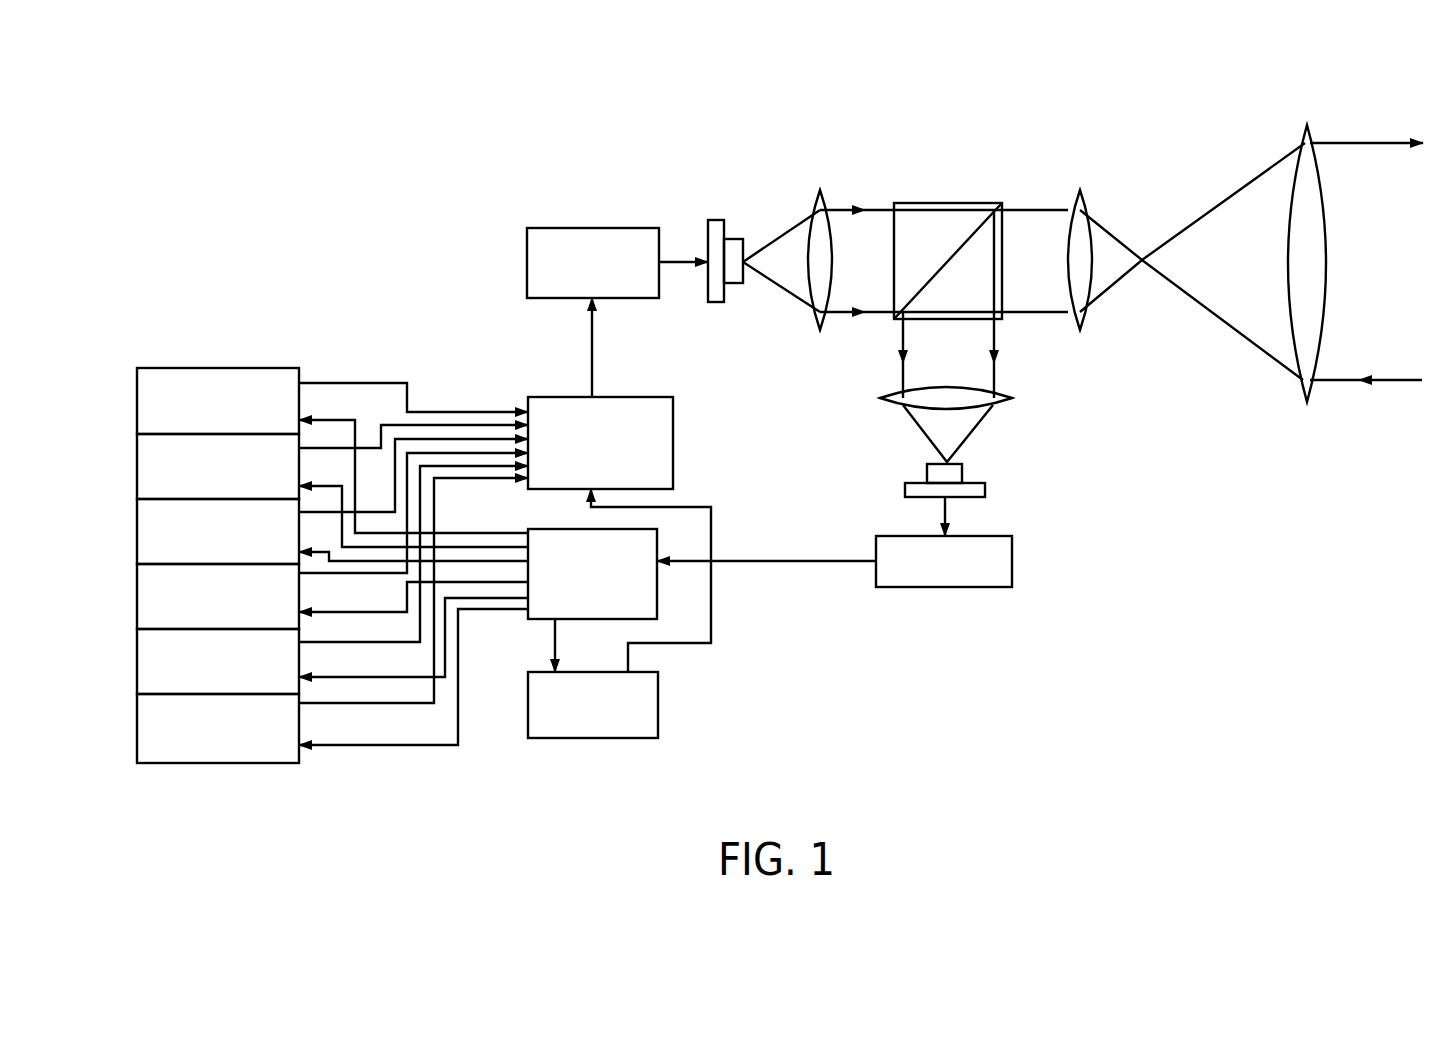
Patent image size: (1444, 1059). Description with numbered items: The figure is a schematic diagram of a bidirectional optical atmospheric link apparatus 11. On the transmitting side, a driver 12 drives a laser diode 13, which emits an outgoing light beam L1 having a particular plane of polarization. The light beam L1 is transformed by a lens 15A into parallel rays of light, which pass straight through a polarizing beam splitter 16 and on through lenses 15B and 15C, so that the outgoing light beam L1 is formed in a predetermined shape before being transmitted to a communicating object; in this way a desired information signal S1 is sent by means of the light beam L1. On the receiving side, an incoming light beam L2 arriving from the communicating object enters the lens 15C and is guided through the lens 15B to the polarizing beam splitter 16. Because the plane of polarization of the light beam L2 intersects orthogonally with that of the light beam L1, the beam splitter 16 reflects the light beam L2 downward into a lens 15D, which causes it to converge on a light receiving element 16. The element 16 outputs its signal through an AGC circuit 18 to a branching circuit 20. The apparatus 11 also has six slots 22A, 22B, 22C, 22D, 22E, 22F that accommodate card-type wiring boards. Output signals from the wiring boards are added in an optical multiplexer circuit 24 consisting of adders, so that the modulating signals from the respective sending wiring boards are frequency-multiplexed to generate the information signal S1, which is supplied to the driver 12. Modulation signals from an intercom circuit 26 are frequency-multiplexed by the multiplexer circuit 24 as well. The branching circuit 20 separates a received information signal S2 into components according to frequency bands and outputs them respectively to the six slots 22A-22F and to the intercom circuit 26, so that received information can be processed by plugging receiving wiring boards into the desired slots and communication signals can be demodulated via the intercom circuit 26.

The optical atmospheric link apparatus 11 is at (1208, 608).
The driver 12 is at (607, 228).
The laser diode 13 is at (735, 239).
The lens 15A is at (812, 330).
The lens 15B is at (1080, 195).
The lens 15C is at (1318, 135).
The lens 15D is at (1012, 400).
The polarizing beam splitter / light receiving element 16 is at (953, 203).
The AGC circuit 18 is at (1012, 568).
The branching circuit 20 is at (553, 529).
The slot 22A is at (137, 405).
The slot 22B is at (137, 470).
The slot 22C is at (137, 535).
The slot 22D is at (137, 598).
The slot 22E is at (137, 663).
The slot 22F is at (137, 726).
The optical multiplexer circuit 24 is at (673, 440).
The intercom circuit 26 is at (658, 702).
The information signal S1 is at (592, 345).
The received information signal S2 is at (795, 563).
The outgoing light beam L1 is at (877, 205).
The incoming light beam L2 is at (994, 373).